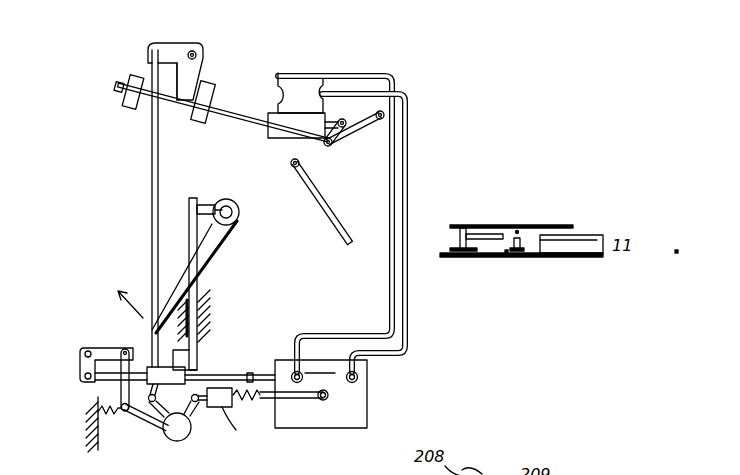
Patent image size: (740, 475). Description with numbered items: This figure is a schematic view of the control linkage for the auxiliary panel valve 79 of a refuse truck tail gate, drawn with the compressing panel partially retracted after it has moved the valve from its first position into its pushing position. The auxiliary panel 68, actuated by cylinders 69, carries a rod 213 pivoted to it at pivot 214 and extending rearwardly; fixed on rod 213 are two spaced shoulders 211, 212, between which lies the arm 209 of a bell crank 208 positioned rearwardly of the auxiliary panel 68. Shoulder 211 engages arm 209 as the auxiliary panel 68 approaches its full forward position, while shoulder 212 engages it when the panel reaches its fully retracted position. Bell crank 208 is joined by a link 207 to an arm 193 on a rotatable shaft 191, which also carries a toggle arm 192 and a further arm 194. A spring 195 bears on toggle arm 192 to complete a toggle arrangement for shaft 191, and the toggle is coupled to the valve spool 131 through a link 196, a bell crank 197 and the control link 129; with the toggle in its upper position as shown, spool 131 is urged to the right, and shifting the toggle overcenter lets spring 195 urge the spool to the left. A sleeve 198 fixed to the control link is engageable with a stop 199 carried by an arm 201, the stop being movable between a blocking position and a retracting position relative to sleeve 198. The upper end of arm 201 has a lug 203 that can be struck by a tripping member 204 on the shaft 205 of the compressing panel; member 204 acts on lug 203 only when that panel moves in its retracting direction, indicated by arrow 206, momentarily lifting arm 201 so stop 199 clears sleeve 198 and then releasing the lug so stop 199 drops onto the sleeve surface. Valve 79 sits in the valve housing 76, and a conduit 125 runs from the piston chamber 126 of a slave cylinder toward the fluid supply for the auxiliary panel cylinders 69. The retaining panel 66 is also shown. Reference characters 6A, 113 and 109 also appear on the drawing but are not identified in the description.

The bell crank 208 is at (190, 32).
The arm 209 is at (195, 80).
The rod 213 is at (240, 118).
The shoulder 212 is at (200, 123).
The shoulder 211 is at (130, 108).
The cylinder 69 is at (300, 107).
The pivot 214 is at (321, 143).
The auxiliary panel 68 is at (333, 150).
The retaining panel 66 is at (322, 206).
The lug 203 is at (200, 201).
The shaft 205 is at (238, 211).
The tripping member 204 is at (226, 230).
The cable 6A is at (212, 254).
The arm 201 is at (199, 293).
The link 207 is at (151, 222).
The arrow 206 is at (127, 303).
The bell crank 197 is at (110, 333).
The sleeve 198 is at (155, 366).
The stop 199 is at (204, 334).
The spool 131 is at (262, 372).
The control link 129 is at (248, 373).
The valve 79 is at (338, 348).
The valve housing 76 is at (381, 410).
The tube 113 is at (389, 281).
The tube 109 is at (409, 282).
The link 196 is at (113, 390).
The spring 195 is at (97, 427).
The toggle arm 192 is at (151, 433).
The rotatable shaft 191 is at (181, 442).
The arm 193 is at (162, 418).
The arm 194 is at (194, 410).
The piston chamber 126 is at (236, 430).
The conduit 125 is at (268, 400).